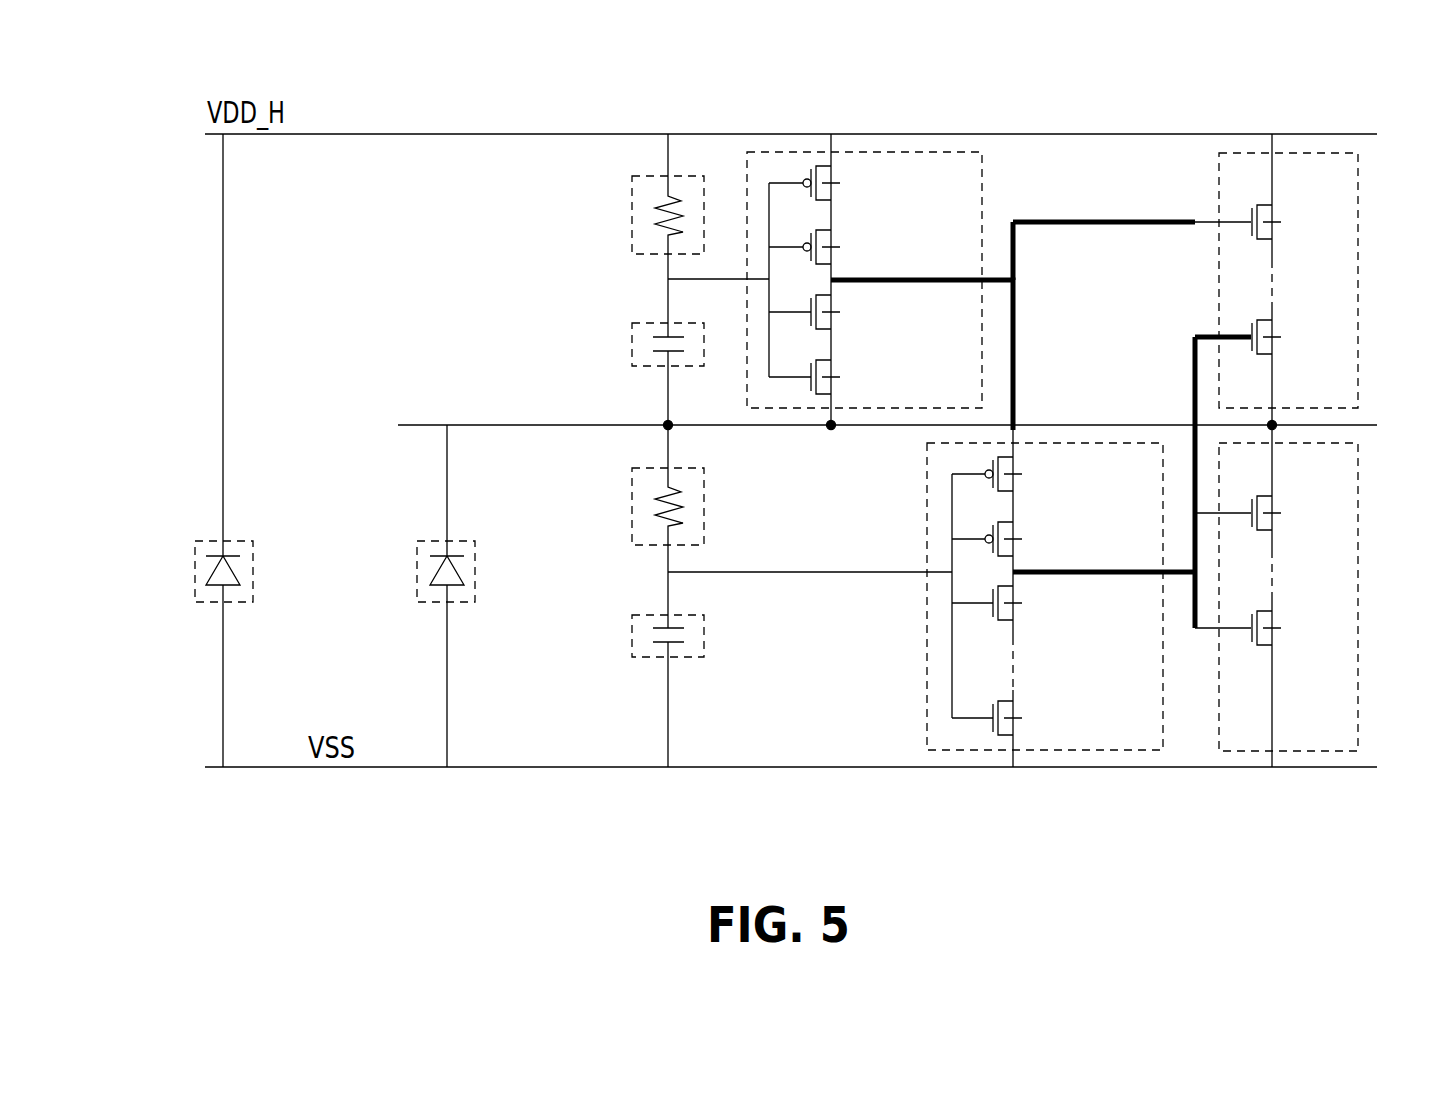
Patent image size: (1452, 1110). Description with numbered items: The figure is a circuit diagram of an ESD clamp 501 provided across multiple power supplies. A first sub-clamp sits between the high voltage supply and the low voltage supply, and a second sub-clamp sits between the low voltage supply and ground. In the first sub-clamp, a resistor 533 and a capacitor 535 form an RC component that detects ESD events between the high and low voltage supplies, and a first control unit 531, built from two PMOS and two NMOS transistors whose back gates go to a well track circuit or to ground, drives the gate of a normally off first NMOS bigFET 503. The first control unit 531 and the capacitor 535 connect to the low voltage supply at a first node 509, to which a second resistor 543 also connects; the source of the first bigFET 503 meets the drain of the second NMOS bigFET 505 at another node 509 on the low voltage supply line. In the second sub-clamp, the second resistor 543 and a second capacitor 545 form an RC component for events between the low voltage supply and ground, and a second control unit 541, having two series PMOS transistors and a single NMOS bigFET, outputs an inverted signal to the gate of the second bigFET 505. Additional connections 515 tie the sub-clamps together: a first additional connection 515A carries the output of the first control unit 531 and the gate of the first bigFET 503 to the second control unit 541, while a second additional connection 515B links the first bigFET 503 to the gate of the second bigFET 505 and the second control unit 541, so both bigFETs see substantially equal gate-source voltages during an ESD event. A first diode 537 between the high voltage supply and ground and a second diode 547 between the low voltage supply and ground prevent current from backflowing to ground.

The ESD clamp 501 is at (1409, 855).
The first NMOS bigFET 503 is at (1358, 272).
The second NMOS bigFET 505 is at (1358, 566).
The first node 509 is at (668, 425).
The additional connections 515 is at (1041, 425).
The first additional connection 515A is at (1013, 365).
The second additional connection 515B is at (1195, 400).
The first control unit 531 is at (948, 152).
The resistor 533 is at (632, 240).
The capacitor 535 is at (632, 347).
The first diode 537 is at (195, 570).
The second control unit 541 is at (1113, 750).
The second resistor 543 is at (632, 534).
The second capacitor 545 is at (632, 637).
The second diode 547 is at (417, 570).